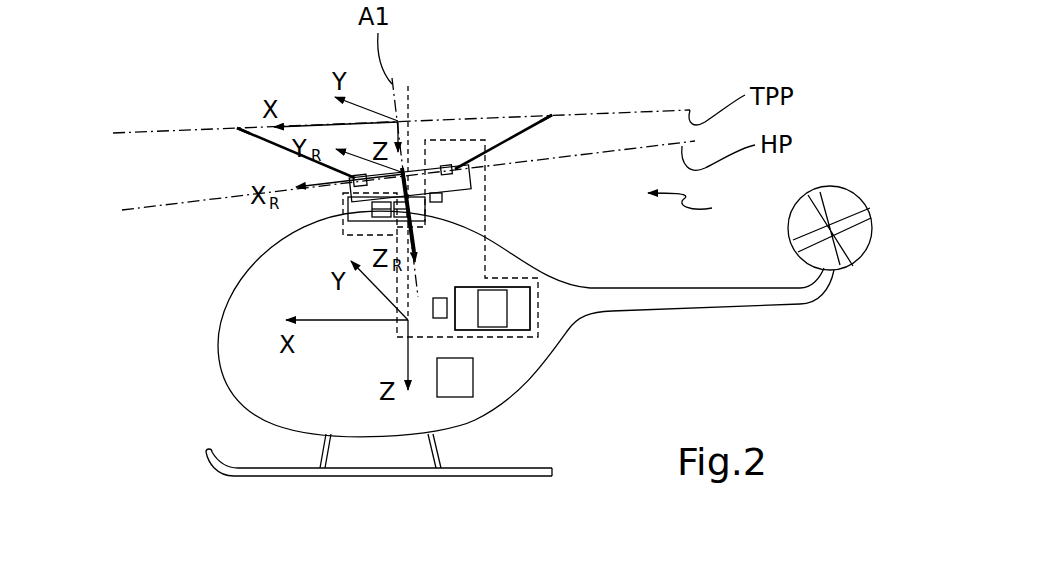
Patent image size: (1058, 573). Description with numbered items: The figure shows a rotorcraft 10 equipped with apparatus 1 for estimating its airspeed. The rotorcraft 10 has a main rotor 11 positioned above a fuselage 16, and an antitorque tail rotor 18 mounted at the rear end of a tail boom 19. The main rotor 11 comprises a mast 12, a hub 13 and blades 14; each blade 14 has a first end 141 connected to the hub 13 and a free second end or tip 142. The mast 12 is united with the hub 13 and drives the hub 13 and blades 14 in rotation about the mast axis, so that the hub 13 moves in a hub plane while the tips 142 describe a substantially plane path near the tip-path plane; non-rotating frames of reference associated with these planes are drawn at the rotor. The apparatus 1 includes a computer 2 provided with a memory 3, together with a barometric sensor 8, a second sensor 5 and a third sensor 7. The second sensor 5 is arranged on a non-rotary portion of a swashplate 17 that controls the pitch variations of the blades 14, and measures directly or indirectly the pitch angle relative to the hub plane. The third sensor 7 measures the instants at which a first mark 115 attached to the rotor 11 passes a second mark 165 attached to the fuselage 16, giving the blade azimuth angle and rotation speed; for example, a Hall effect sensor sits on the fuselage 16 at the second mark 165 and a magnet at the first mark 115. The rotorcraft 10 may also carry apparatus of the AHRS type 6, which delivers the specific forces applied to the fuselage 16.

The apparatus for estimating an airspeed 1 is at (538, 303).
The computer 2 is at (511, 332).
The memory 3 is at (492, 308).
The second sensor 5 is at (437, 200).
The apparatus of the AHRS type 6 is at (455, 377).
The third sensor 7 is at (386, 209).
The barometric sensor 8 is at (440, 320).
The rotorcraft 10 is at (112, 404).
The main rotor 11 is at (699, 208).
The mast 12 is at (420, 230).
The hub 13 is at (431, 165).
The blade 14 is at (278, 150).
The fuselage 16 is at (540, 377).
The swashplate 17 is at (470, 178).
The antitorque tail rotor 18 is at (875, 240).
The tail boom 19 is at (728, 311).
The first mark 115 is at (397, 228).
The first end 141 is at (356, 174).
The second end or tip 142 is at (237, 128).
The second mark 165 is at (343, 220).